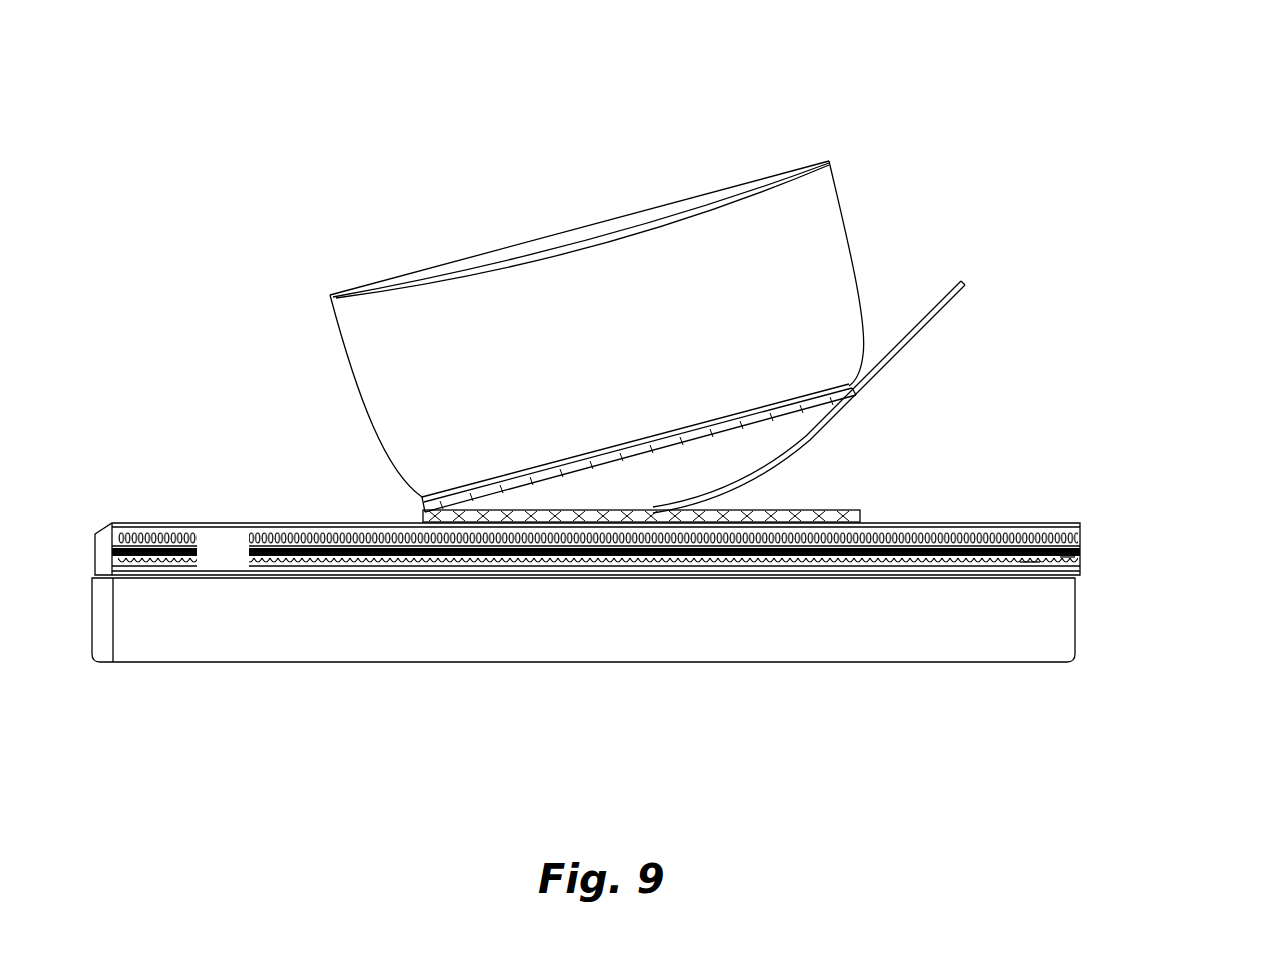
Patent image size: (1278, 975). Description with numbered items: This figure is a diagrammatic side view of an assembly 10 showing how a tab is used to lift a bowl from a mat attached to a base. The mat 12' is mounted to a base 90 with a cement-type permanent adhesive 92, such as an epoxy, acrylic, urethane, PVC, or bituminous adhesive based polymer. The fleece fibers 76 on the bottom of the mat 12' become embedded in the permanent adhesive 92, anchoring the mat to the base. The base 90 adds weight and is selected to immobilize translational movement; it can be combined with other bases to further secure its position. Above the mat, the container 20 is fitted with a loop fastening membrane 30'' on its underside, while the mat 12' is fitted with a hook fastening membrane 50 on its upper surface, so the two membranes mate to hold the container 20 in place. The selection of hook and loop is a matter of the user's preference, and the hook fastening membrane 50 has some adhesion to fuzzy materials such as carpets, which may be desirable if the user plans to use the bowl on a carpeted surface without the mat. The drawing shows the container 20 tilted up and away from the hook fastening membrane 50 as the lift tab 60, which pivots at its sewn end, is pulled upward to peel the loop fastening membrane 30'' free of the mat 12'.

The display apparatus 10 is at (1146, 98).
The container 20 is at (605, 334).
The loop fastening membrane 30'' is at (549, 450).
The hook fastening membrane 50 is at (795, 510).
The lift tab 60 is at (948, 313).
The mat 12' is at (587, 549).
The permanent adhesive 92 is at (1060, 565).
The fleece fibers 76 is at (1027, 563).
The base 90 is at (667, 632).